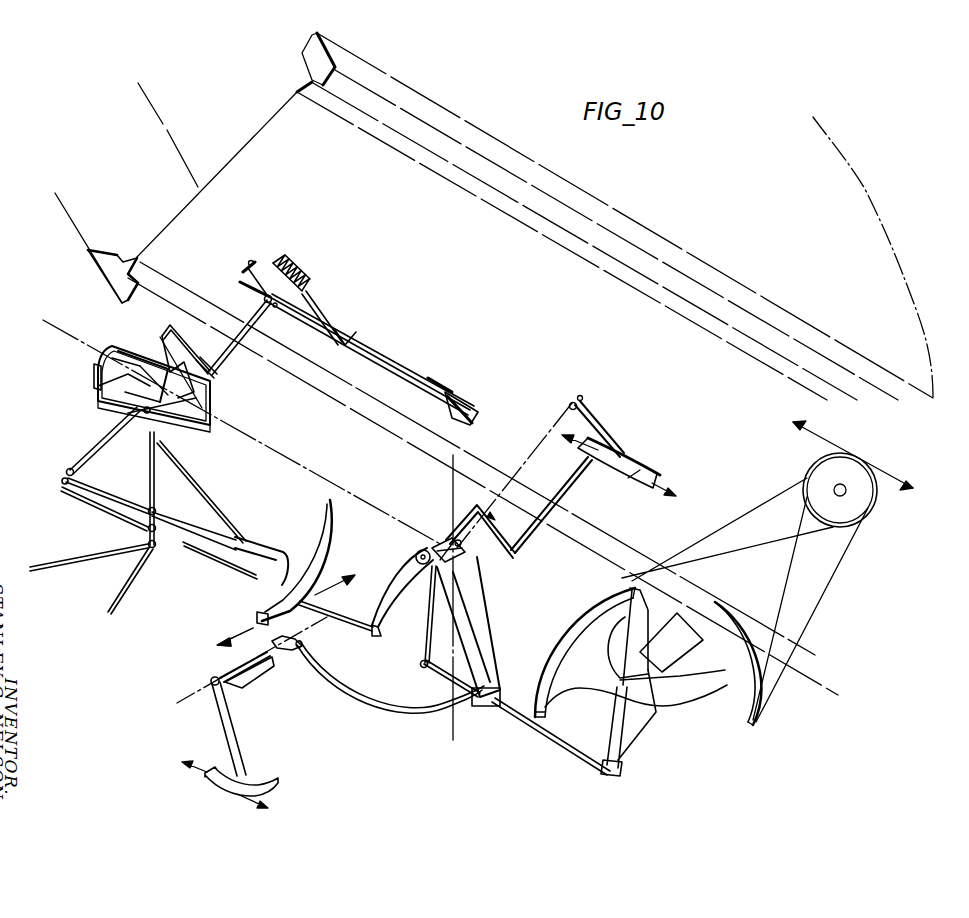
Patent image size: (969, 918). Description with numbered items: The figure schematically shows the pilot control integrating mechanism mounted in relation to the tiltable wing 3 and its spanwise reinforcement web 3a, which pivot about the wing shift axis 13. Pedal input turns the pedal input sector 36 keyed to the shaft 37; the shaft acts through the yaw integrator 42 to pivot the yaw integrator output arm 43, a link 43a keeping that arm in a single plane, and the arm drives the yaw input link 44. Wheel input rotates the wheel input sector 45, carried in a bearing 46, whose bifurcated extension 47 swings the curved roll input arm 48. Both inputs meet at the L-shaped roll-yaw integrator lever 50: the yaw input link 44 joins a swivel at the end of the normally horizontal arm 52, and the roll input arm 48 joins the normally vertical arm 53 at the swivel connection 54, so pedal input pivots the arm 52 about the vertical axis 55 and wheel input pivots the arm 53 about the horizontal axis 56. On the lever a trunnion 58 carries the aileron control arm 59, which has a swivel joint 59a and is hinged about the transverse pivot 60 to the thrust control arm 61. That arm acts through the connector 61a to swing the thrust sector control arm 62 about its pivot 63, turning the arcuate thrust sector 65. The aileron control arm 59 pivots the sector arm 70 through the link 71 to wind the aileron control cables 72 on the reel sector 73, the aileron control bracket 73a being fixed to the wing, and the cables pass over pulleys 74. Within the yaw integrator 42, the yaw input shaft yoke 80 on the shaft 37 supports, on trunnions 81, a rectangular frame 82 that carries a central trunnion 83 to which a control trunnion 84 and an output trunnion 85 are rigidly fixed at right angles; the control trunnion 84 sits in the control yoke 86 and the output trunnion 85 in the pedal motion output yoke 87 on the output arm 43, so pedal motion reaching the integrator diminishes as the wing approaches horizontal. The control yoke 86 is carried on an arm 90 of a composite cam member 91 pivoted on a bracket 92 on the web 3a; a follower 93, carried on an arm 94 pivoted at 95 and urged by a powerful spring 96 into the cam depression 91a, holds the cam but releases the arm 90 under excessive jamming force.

The wing 3 is at (753, 212).
The reinforcement web 3a is at (428, 249).
The wing pivot axis 13 is at (294, 460).
The pedal input sector 36 is at (322, 536).
The shaft 37 is at (154, 494).
The yaw integrator 42 is at (100, 310).
The yaw integrator output arm 43 is at (87, 453).
The link 43a is at (108, 480).
The yaw input link 44 is at (110, 511).
The wheel input sector 45 is at (260, 780).
The bearing 46 is at (255, 672).
The bifurcated extension 47 is at (286, 641).
The roll input arm 48 is at (342, 700).
The roll-yaw integrator lever 50 is at (497, 601).
The horizontal arm 52 is at (410, 568).
The vertical arm 53 is at (488, 640).
The pivotal connection 54 is at (482, 705).
The vertical axis 55 is at (452, 740).
The horizontal axis 56 is at (193, 700).
The trunnion 58 is at (428, 540).
The aileron control arm 59 is at (428, 630).
The swivel joint 59a is at (422, 666).
The transverse pivot 60 is at (457, 543).
The thrust control arm 61 is at (503, 535).
The connector 61a is at (565, 500).
The thrust sector control arm 62 is at (600, 428).
The pivot 63 is at (568, 405).
The arcuate sector 65 is at (642, 468).
The sector arm 70 is at (630, 745).
The link 71 is at (553, 745).
The aileron control cables 72 is at (808, 608).
The reel sector 73 is at (727, 684).
The aileron control bracket 73a is at (690, 654).
The pulleys 74 is at (866, 497).
The yaw input shaft yoke 80 is at (213, 406).
The trunnions 81 is at (96, 366).
The rectangular frame 82 is at (116, 348).
The trunnion 83 is at (162, 342).
The control trunnion 84 is at (214, 379).
The trunnion 85 is at (146, 414).
The control yoke 86 is at (176, 328).
The pedal motion output yoke 87 is at (97, 392).
The arm 90 is at (240, 338).
The composite cam member 91 is at (270, 295).
The depression 91a is at (262, 300).
The bracket 92 is at (250, 262).
The follower 93 is at (313, 308).
The arm 94 is at (386, 360).
The pivot 95 is at (466, 404).
The spring 96 is at (300, 275).